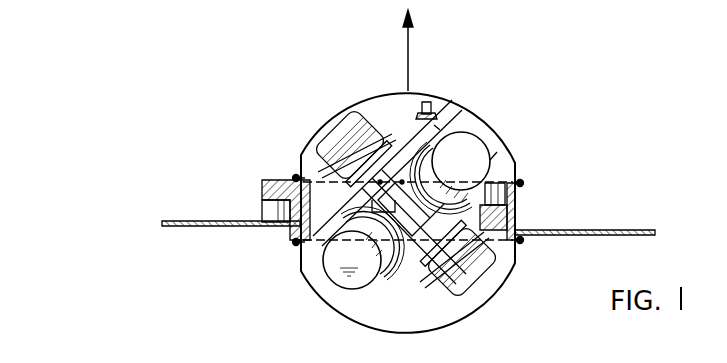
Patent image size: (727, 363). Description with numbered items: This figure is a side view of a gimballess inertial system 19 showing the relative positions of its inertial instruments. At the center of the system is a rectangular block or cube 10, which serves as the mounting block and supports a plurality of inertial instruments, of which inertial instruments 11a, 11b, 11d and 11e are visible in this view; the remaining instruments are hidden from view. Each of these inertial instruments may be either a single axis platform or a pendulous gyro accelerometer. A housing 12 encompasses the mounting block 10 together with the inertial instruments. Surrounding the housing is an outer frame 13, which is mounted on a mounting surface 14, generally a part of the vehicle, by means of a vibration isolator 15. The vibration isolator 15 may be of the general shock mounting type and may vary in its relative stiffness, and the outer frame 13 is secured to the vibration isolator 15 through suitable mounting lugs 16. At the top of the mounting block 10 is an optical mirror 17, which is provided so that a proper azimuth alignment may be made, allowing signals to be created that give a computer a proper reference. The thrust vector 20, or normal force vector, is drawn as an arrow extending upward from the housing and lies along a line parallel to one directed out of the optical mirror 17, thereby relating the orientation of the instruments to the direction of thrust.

The rectangular block 10 is at (440, 132).
The inertial instrument 11a is at (482, 147).
The inertial instrument 11b is at (364, 112).
The inertial instrument 11d is at (486, 282).
The inertial instrument 11e is at (338, 287).
The housing 12 is at (408, 92).
The outer frame 13 is at (518, 210).
The mounting surface 14 is at (178, 229).
The vibration isolator 15 is at (262, 206).
The mounting lugs 16 is at (276, 180).
The optical mirror 17 is at (432, 104).
The gimballess inertial system 19 is at (237, 108).
The thrust vector 20 is at (410, 48).